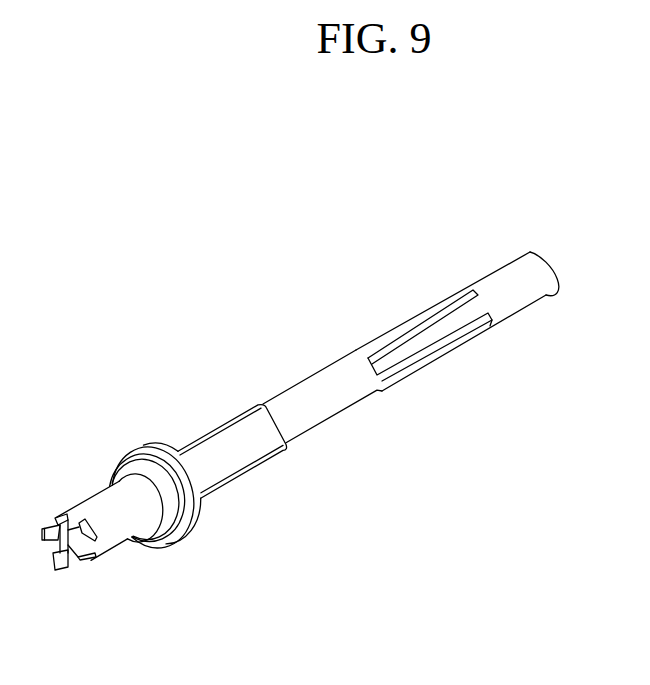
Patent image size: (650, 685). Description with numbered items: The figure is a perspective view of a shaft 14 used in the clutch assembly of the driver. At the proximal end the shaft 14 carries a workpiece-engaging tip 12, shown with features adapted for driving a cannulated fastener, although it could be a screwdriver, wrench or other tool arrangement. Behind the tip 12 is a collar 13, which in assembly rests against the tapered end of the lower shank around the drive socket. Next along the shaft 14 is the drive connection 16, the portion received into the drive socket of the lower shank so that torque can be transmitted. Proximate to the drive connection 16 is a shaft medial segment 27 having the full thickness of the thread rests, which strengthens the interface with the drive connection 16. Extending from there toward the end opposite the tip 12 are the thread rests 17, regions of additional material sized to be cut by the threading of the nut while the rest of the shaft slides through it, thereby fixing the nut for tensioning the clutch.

The workpiece-engaging tip 12 is at (78, 604).
The collar 13 is at (177, 583).
The shaft 14 is at (102, 349).
The drive connection 16 is at (225, 523).
The thread rests 17 is at (504, 347).
The shaft medial segment 27 is at (362, 460).